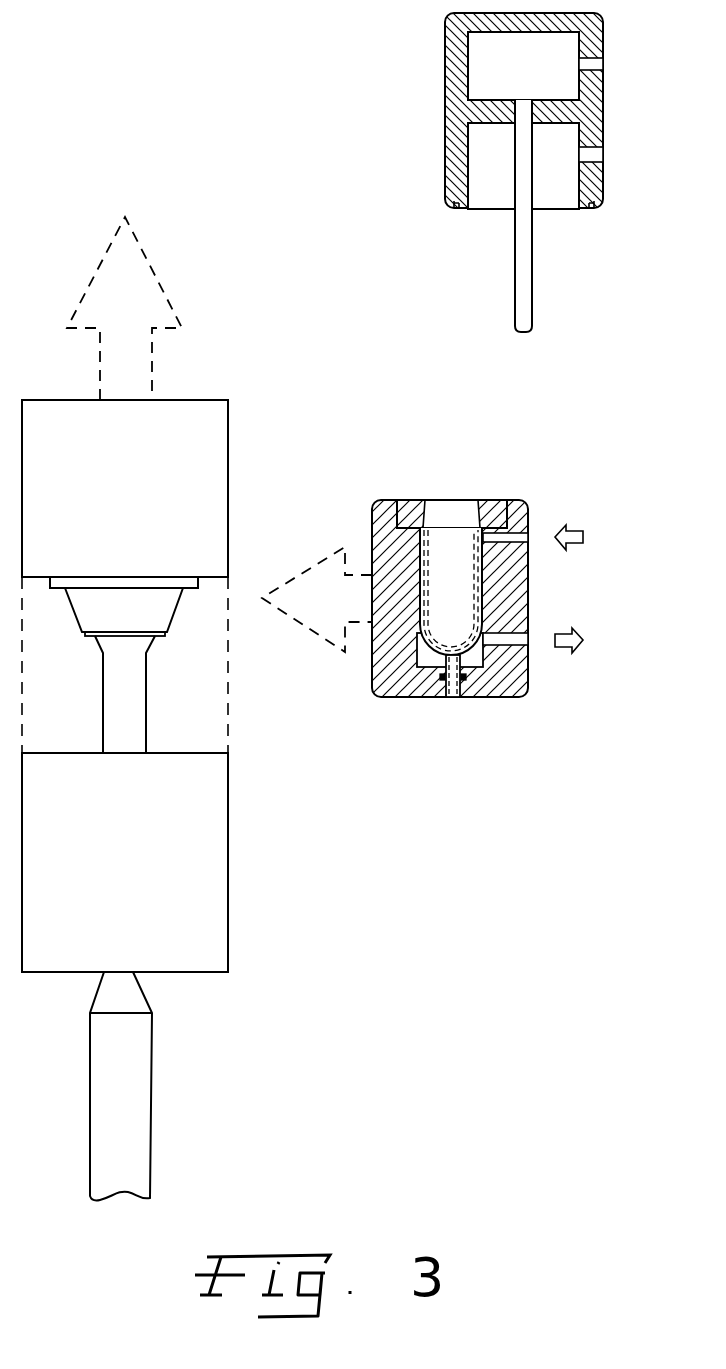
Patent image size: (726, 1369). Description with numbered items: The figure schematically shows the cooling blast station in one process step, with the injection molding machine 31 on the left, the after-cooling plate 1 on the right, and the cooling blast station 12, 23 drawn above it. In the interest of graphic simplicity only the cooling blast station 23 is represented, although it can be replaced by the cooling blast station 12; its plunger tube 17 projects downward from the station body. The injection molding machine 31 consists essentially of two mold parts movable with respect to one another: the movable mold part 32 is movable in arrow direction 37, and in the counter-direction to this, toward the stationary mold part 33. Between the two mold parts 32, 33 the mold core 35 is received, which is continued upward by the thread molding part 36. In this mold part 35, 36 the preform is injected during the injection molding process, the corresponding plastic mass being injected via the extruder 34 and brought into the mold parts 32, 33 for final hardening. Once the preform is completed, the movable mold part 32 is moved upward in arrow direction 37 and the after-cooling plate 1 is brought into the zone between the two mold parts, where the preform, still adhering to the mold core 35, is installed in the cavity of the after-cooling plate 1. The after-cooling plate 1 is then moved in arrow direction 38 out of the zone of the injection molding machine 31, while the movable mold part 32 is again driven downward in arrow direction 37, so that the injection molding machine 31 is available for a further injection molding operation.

The cooling blast station 12 is at (460, 104).
The cooling blast station 23 is at (430, 52).
The plunger tube 17 is at (528, 283).
The arrow direction 37 is at (162, 285).
The injection molding machine 31 is at (270, 440).
The movable mold part 32 is at (210, 500).
The stationary mold part 33 is at (197, 880).
The extruder 34 is at (138, 1087).
The mold core 35 is at (143, 713).
The thread molding part 36 is at (163, 613).
The arrow direction 38 is at (305, 568).
The after-cooling plate 1 is at (503, 688).